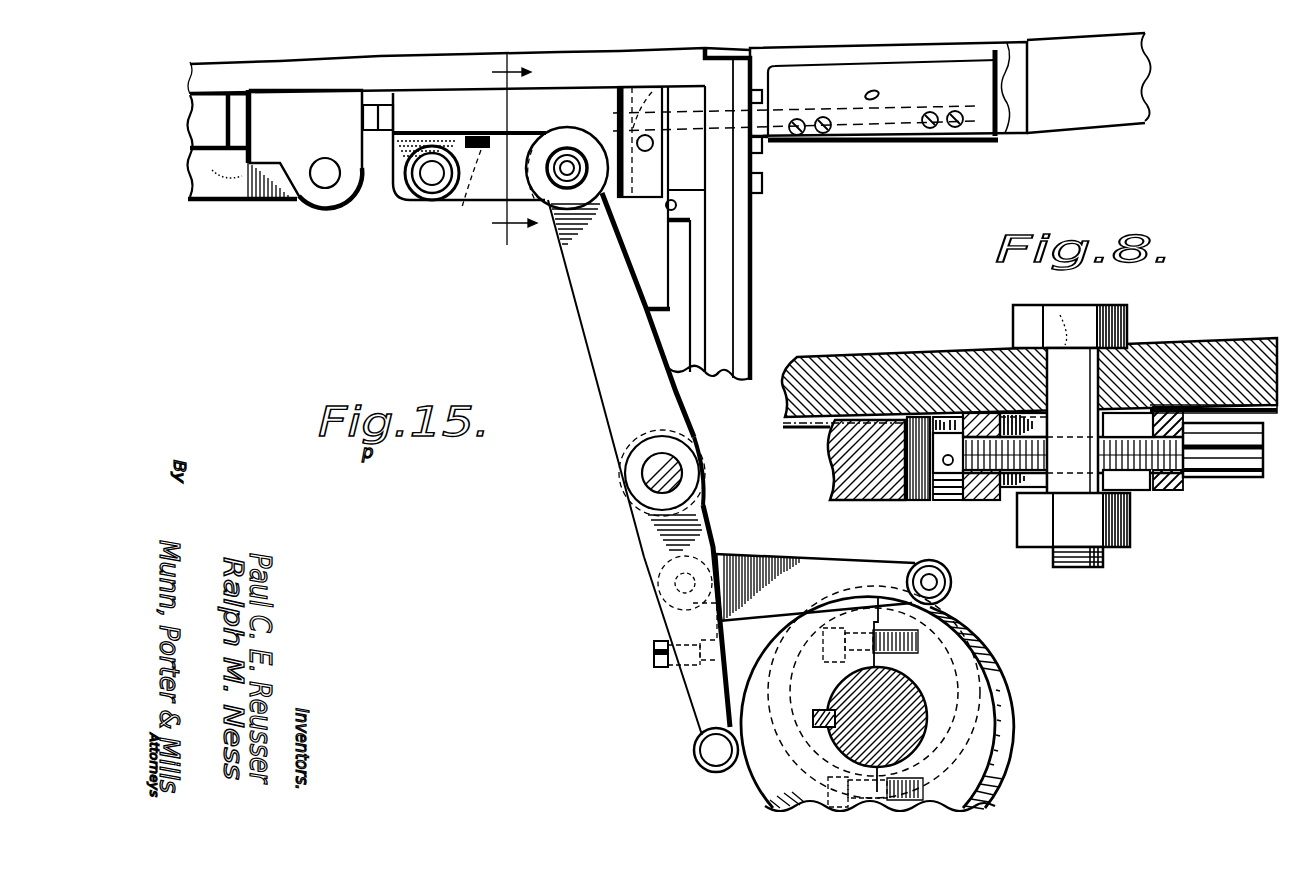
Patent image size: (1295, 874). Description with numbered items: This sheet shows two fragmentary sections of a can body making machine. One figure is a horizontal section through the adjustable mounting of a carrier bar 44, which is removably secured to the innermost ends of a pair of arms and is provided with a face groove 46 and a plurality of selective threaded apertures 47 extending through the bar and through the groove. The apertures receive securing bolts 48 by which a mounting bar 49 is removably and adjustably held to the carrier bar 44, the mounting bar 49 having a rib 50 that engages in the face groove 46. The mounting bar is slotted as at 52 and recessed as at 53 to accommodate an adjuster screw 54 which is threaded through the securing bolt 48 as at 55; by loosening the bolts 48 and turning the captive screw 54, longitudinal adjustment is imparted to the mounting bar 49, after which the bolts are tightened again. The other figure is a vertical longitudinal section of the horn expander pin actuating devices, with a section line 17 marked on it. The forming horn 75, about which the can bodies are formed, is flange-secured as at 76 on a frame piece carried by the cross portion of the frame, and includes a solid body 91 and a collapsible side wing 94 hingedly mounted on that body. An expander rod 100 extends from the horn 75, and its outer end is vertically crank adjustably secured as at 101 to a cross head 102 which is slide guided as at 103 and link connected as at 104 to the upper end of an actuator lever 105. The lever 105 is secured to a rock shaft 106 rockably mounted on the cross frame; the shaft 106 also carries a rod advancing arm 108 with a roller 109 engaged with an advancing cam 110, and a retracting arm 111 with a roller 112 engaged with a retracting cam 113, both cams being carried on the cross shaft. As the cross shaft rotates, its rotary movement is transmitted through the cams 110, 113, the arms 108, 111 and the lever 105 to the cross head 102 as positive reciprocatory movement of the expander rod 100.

In FIG. 15, the section line 17- 17 is at (495, 152).
In FIG. 8, the carrier bar 44 is at (847, 357).
In FIG. 8, the face groove 46 is at (1243, 403).
In FIG. 8, the threaded apertures 47 is at (1103, 368).
In FIG. 8, the securing bolts 48 is at (1060, 360).
In FIG. 8, the mounting bar 49 is at (843, 472).
In FIG. 8, the rib 50 is at (830, 440).
In FIG. 8, the slot 52 is at (1017, 417).
In FIG. 8, the recess 53 is at (923, 425).
In FIG. 8, the adjuster screw 54 is at (1130, 460).
In FIG. 8, the threaded connection 55 is at (1073, 448).
In FIG. 15, the forming horn 75 is at (1029, 47).
In FIG. 15, the flange 76 is at (762, 200).
In FIG. 15, the solid body 91 is at (917, 50).
In FIG. 15, the collapsible side wing 94 is at (902, 100).
In FIG. 15, the expander rod 100 is at (780, 123).
In FIG. 15, the crank adjustable connection 101 is at (652, 99).
In FIG. 15, the cross head 102 is at (557, 88).
In FIG. 15, the slide guide 103 is at (367, 172).
In FIG. 15, the link connection 104 is at (468, 207).
In FIG. 15, the actuator lever 105 is at (590, 318).
In FIG. 15, the rock shaft 106 is at (645, 482).
In FIG. 15, the rod advancing arm 108 is at (683, 688).
In FIG. 15, the roller 109 is at (694, 752).
In FIG. 15, the advancing cam 110 is at (762, 770).
In FIG. 15, the retracting arm 111 is at (803, 547).
In FIG. 15, the roller 112 is at (951, 577).
In FIG. 15, the retracting cam 113 is at (992, 647).